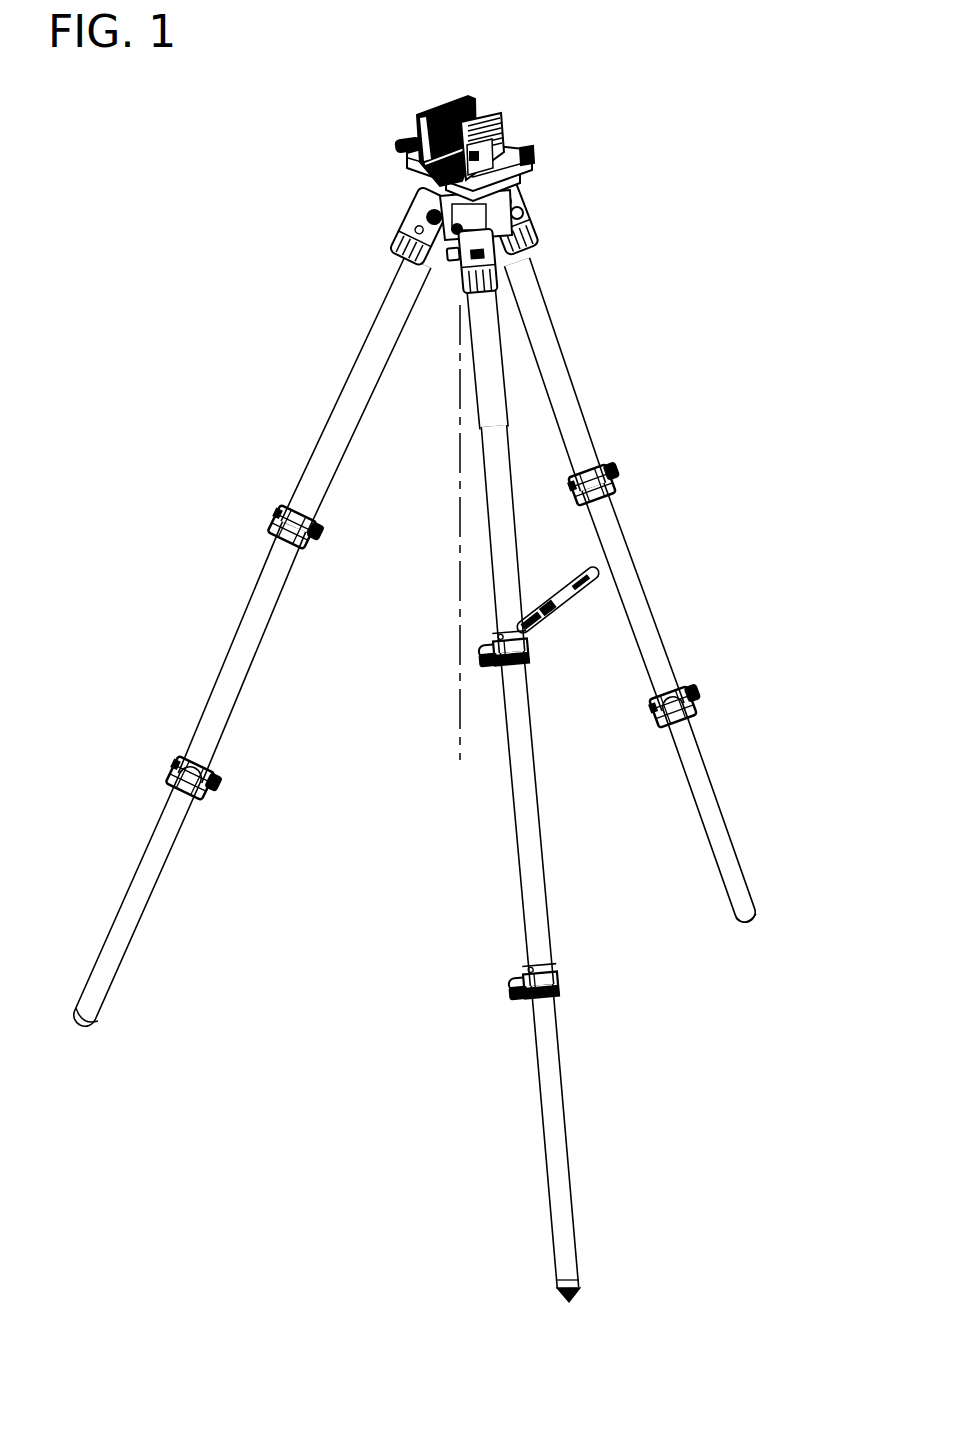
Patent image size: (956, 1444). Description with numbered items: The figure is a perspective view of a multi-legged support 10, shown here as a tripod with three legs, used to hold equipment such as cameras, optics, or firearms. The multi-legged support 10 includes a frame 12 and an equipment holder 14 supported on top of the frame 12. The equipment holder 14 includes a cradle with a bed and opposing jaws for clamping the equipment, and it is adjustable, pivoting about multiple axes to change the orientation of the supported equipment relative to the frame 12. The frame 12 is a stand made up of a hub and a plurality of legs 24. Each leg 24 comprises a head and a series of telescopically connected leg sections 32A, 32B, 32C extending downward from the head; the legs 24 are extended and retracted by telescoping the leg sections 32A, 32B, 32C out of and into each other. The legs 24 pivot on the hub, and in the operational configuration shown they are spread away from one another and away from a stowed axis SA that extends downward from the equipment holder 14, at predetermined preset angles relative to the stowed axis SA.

The multi-legged support 10 is at (452, 667).
The frame 12 is at (452, 782).
The equipment holder 14 is at (378, 104).
The leg 24 is at (452, 782).
The leg section 32A is at (357, 375).
The leg section 32B is at (210, 715).
The leg section 32C is at (123, 928).
The stowed axis SA is at (458, 720).